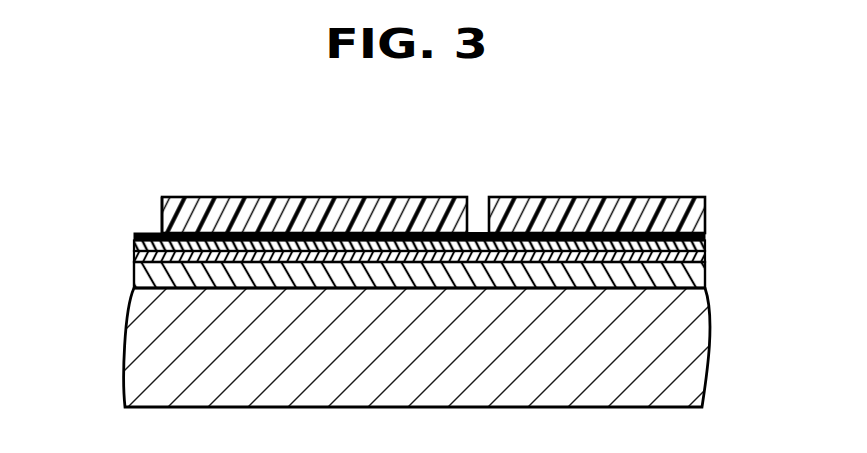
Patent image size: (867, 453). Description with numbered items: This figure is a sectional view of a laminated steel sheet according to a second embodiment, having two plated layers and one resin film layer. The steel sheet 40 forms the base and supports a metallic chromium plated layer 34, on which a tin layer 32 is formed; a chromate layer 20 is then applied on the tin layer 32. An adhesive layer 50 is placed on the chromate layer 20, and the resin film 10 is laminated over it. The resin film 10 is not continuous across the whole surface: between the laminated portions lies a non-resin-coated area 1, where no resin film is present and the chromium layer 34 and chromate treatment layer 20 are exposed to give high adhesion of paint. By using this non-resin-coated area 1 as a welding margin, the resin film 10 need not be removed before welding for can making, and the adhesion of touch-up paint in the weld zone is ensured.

The non-resin-coated area 1 is at (480, 233).
The resin film 10 is at (703, 220).
The chromate treatment layer 20 is at (133, 244).
The tin layer 32 is at (704, 258).
The metallic chromium plated layer 34 is at (705, 270).
The steel sheet 40 is at (697, 338).
The adhesive layer 50 is at (160, 234).